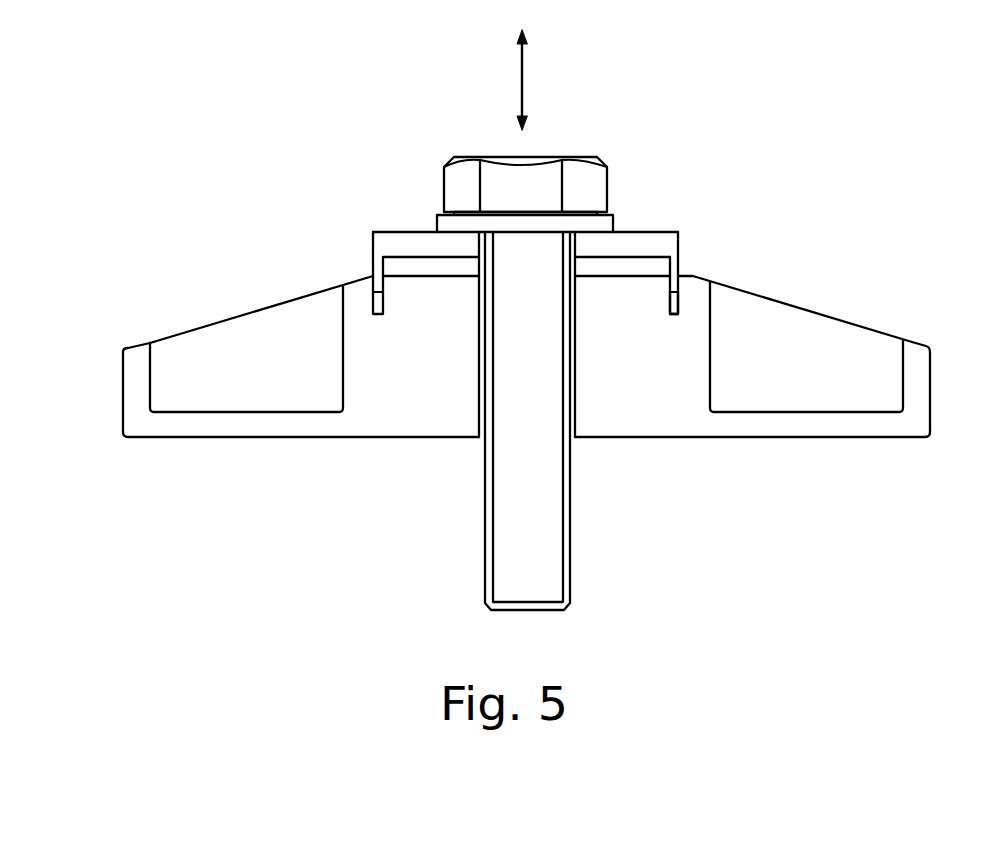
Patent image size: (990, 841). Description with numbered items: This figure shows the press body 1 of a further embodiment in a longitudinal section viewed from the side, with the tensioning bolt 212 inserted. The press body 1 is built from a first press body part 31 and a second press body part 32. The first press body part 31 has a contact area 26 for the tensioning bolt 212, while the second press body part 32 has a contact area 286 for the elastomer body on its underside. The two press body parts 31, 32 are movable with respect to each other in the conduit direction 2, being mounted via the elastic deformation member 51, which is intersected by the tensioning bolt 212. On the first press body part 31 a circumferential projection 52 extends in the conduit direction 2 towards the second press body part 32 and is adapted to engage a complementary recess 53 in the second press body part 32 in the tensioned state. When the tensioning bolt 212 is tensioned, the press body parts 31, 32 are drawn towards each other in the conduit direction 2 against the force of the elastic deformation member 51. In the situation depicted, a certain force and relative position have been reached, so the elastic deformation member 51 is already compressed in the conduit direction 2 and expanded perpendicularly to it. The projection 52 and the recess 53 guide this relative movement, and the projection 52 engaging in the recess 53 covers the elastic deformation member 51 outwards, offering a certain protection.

The press body 1 is at (305, 160).
The conduit direction 2 is at (524, 82).
The contact area 26 is at (580, 231).
The first press body part 31 is at (623, 243).
The second press body part 32 is at (645, 393).
The elastic deformation member 51 is at (623, 268).
The circumferential projection 52 is at (676, 283).
The complementary recess 53 is at (681, 312).
The tensioning bolt 212 is at (512, 325).
The bottom support surface 286 is at (592, 438).